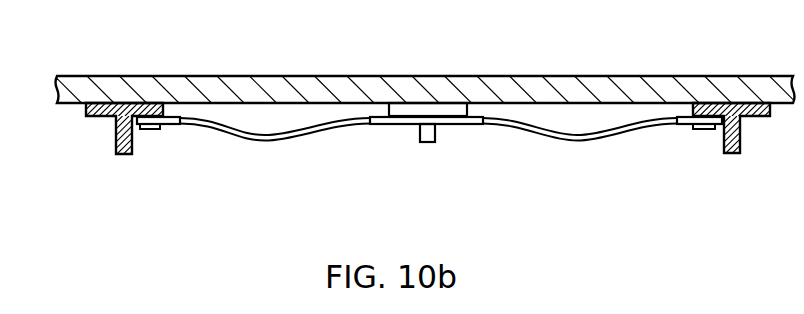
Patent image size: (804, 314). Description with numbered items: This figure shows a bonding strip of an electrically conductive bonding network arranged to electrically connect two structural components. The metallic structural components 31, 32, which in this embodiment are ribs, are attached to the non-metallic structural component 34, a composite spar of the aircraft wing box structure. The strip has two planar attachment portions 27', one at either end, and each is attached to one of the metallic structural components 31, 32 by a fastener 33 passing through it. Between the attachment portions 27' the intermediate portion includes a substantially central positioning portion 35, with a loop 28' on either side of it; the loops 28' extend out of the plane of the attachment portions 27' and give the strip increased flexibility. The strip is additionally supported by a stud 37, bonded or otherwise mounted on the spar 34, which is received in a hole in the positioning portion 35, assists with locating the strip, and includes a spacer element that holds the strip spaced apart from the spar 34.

The non-metallic structural component 34 is at (468, 75).
The metallic structural component 31 is at (115, 142).
The metallic structural component 32 is at (742, 138).
The positioning portion 35 is at (407, 125).
The stud 37 is at (437, 138).
The attachment portion 27' is at (429, 150).
The fastener 33 is at (147, 130).
The loop 28' is at (428, 157).